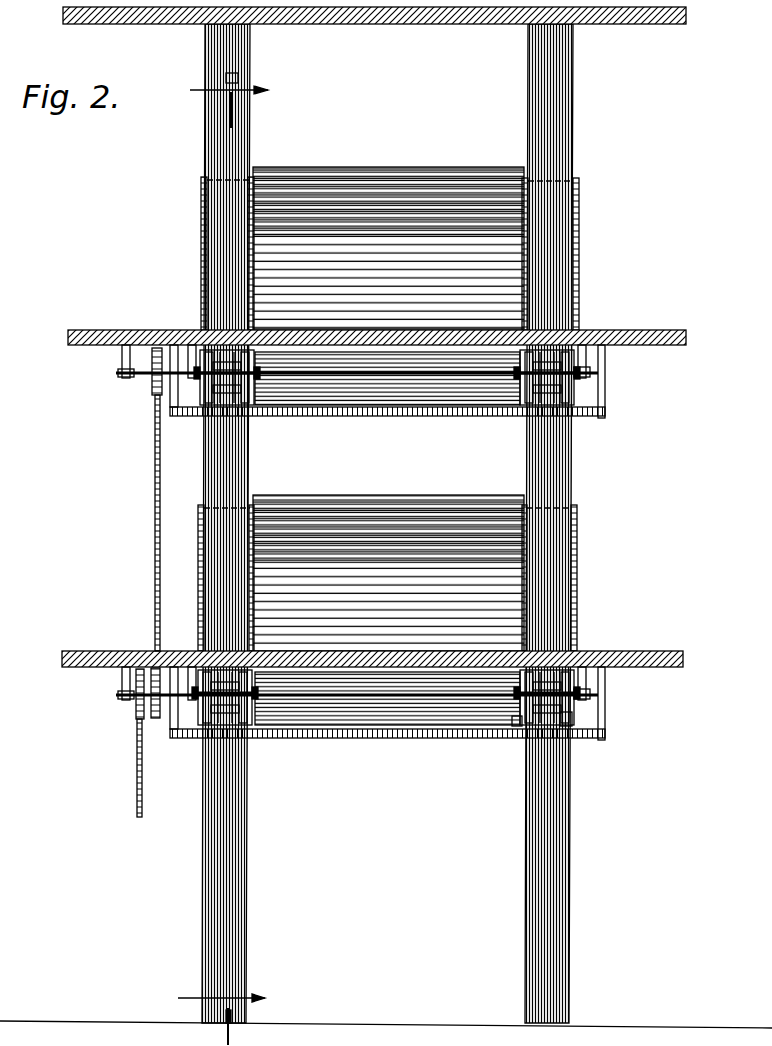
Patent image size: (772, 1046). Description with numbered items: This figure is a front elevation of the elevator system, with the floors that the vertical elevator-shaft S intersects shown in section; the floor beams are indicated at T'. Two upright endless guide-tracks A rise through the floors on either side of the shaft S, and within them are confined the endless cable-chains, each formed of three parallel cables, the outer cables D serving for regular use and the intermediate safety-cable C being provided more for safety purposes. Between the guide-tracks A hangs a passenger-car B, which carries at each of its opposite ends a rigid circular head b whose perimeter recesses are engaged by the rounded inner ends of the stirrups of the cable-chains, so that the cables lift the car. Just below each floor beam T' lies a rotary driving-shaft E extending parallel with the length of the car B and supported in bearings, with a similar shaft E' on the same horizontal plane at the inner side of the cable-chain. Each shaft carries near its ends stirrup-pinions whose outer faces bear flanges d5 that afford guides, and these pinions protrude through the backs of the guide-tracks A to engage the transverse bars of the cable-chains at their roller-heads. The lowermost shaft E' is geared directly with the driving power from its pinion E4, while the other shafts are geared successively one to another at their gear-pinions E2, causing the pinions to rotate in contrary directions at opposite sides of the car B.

The endless guide-track A is at (205, 131).
The passenger-car B is at (388, 409).
The rigid circular head b is at (196, 233).
The floor / transverse beam T' is at (374, 337).
The safety-cable C is at (215, 737).
The cable D is at (205, 728).
The flange d5 is at (515, 730).
The rotary driving-shaft E is at (387, 566).
The driving-shaft E' is at (127, 499).
The gear-pinion E2 is at (150, 658).
The pinion E4 is at (136, 712).
The elevator-shaft S is at (383, 866).